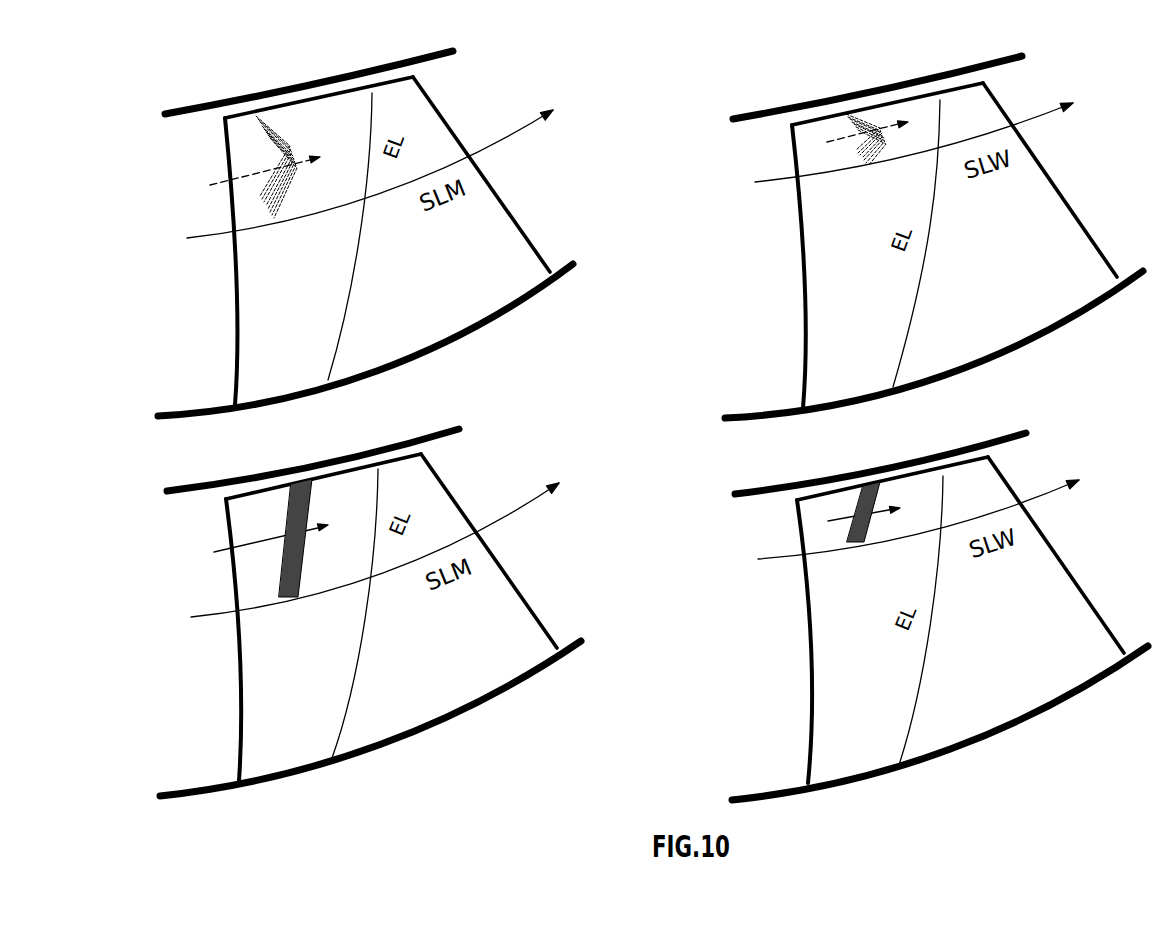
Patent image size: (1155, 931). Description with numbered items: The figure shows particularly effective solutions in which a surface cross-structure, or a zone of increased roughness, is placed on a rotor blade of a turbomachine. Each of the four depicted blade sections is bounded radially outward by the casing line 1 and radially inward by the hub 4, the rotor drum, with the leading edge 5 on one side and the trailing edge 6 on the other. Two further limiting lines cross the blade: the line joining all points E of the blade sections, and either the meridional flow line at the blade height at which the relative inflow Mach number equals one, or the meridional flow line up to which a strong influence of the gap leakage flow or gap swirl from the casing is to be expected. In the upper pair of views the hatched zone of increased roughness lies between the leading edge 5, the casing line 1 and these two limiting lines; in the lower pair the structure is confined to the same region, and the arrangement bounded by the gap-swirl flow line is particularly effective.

The casing line 1 is at (380, 68).
The hub 4 is at (463, 339).
The leading edge 5 is at (235, 326).
The trailing edge 6 is at (523, 217).